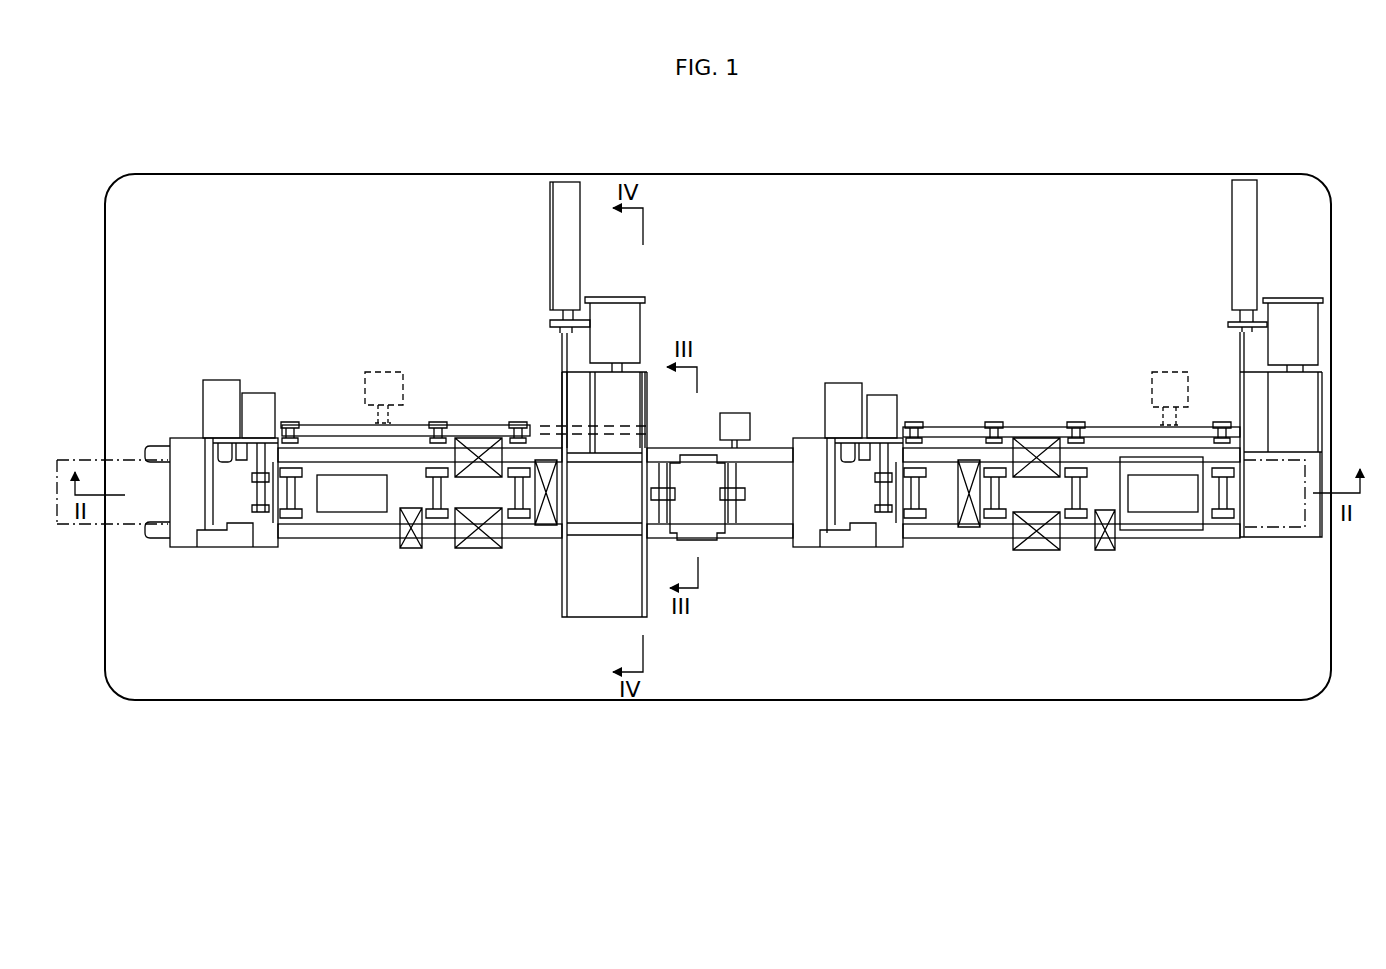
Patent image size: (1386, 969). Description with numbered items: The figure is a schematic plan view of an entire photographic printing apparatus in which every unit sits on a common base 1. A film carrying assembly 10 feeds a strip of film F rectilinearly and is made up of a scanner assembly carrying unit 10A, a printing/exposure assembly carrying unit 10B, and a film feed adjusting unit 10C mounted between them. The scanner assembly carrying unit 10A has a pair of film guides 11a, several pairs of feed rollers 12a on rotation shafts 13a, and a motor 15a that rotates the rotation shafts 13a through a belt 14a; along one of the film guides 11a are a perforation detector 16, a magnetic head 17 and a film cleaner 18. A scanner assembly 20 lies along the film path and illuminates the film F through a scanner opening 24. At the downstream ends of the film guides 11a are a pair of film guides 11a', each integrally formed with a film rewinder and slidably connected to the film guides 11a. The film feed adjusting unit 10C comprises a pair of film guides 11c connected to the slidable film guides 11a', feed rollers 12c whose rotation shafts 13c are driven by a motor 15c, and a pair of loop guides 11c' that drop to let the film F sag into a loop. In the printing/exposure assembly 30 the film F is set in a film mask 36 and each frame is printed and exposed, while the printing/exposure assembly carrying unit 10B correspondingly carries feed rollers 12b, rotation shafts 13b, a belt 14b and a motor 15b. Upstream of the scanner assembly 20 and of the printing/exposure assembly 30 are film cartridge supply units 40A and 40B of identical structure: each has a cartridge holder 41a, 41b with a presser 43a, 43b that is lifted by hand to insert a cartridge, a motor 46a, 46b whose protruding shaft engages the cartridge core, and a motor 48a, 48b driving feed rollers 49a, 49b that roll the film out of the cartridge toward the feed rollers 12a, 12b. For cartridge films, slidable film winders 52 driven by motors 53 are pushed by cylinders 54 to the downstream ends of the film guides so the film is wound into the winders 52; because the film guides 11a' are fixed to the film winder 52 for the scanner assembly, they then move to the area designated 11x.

The common base 1 is at (1085, 185).
The film carrying assembly 10 is at (352, 447).
The scanner assembly carrying unit 10A is at (452, 356).
The printing/exposure assembly carrying unit 10B is at (1004, 386).
The film feed adjusting unit 10C is at (692, 420).
The film guides 11a is at (420, 530).
The film guides with film rewinder 11a' is at (604, 532).
The film guides 11c is at (740, 526).
The loop guides 11c' is at (677, 590).
The area for displaced film guides 11x is at (565, 617).
The feed rollers 12a is at (292, 518).
The feed rollers 12b is at (937, 428).
The feed rollers 12c is at (717, 465).
The rotation shafts 13a is at (313, 540).
The rotation shafts 13b is at (1102, 462).
The rotation shafts 13c is at (737, 478).
The belt 14a is at (472, 436).
The belt 14b is at (960, 428).
The motor 15a is at (378, 372).
The motor 15b is at (1186, 372).
The motor 15c is at (740, 412).
The perforation detector 16 is at (412, 549).
The magnetic head 17 is at (470, 549).
The film cleaner 18 is at (537, 540).
The scanner assembly 20 is at (327, 445).
The scanner opening 24 is at (350, 512).
The printing/exposure assembly 30 is at (1149, 468).
The film mask 36 is at (1145, 534).
The film cartridge supply unit 40A is at (231, 365).
The film cartridge supply unit 40B is at (849, 356).
The cartridge holder 41a is at (178, 548).
The cartridge holder 41b is at (813, 548).
The presser 43a is at (210, 548).
The presser 43b is at (850, 548).
The motor 46a is at (218, 390).
The motor 46b is at (828, 415).
The motor 48a is at (257, 403).
The motor 48b is at (880, 405).
The feed rollers 49a is at (240, 548).
The feed rollers 49b is at (888, 548).
The film winder 52 is at (570, 400).
The motor 53 is at (623, 310).
The cylinder 54 is at (555, 215).
The film F is at (86, 458).